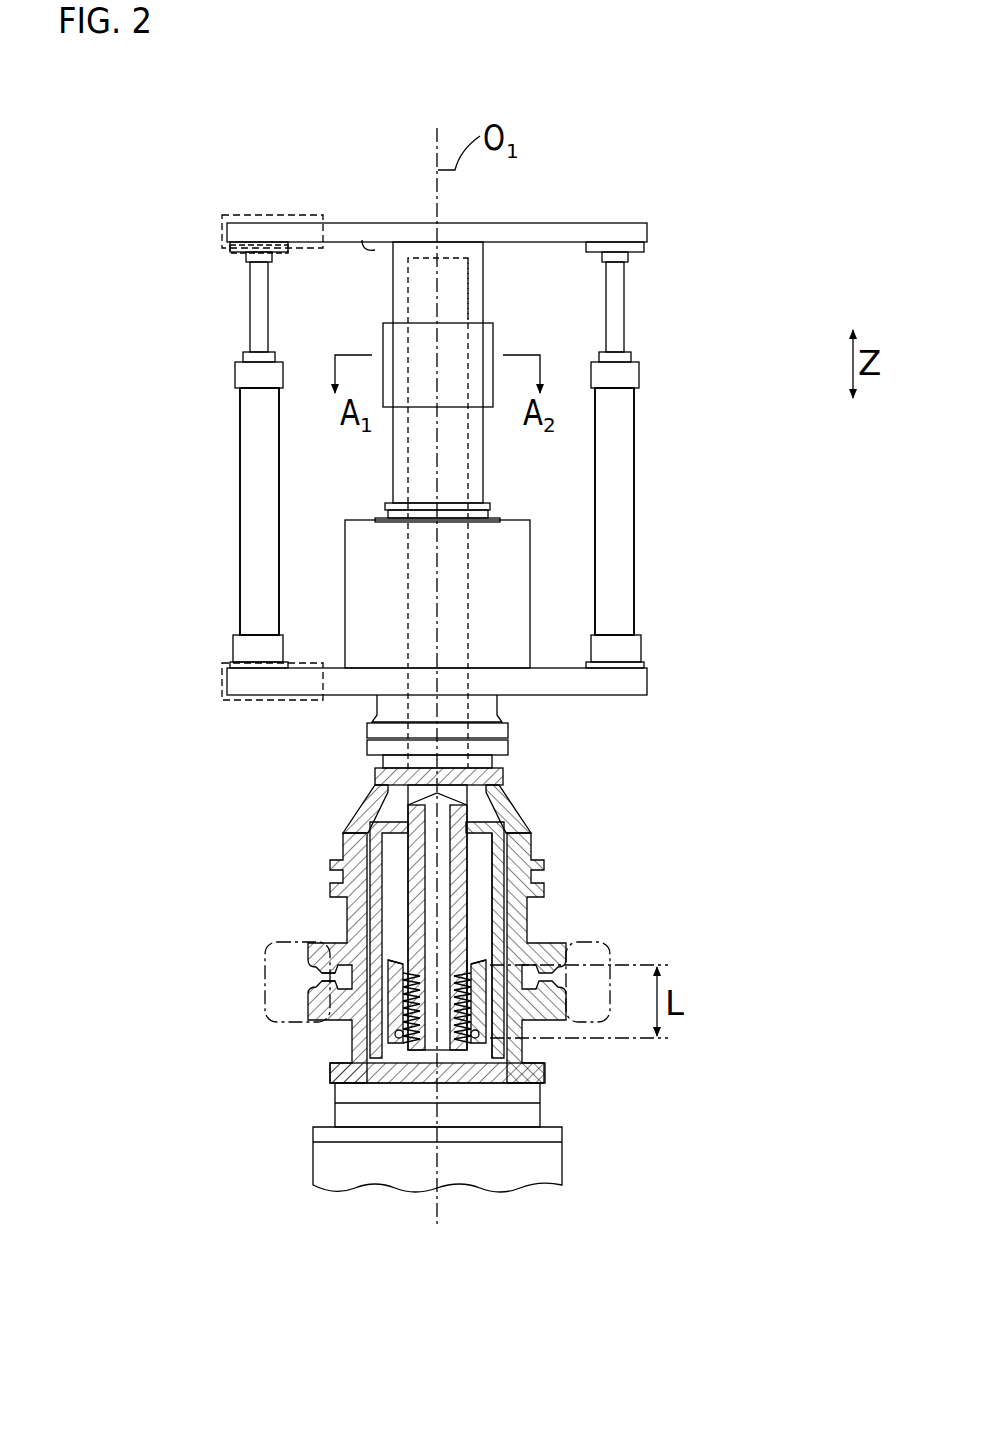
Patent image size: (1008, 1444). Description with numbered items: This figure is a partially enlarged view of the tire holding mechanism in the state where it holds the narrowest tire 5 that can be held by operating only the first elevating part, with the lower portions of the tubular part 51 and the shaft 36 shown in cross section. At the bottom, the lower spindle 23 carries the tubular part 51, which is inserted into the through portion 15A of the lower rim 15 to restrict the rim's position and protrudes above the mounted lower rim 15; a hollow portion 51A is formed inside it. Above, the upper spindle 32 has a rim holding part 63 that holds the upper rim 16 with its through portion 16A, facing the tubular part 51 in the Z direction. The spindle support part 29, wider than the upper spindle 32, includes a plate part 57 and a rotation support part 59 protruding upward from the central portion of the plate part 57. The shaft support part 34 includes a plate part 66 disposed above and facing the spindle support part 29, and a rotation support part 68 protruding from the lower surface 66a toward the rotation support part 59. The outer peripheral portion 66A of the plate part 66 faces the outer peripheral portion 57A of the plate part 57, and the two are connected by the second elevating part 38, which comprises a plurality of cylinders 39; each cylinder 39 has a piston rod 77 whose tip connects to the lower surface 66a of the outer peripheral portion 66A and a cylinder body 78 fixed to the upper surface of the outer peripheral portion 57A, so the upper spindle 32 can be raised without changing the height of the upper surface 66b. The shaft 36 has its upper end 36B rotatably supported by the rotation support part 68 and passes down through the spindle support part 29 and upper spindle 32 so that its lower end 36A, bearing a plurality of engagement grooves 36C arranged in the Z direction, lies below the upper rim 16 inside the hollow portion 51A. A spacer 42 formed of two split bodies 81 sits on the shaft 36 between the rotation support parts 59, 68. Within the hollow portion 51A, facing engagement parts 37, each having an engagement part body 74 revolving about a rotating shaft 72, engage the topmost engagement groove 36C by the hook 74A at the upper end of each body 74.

The tire 5 is at (265, 982).
The lower rim 15 is at (377, 1027).
The through portion 15A is at (370, 1045).
The upper rim 16 is at (330, 947).
The through portion 16A is at (383, 967).
The lower spindle 23 is at (312, 1152).
The spindle support part 29 is at (740, 570).
The upper spindle 32 is at (362, 757).
The shaft support part 34 is at (262, 218).
The shaft 36 is at (472, 470).
The lower end 36A is at (482, 1000).
The upper end 36B is at (470, 288).
The engagement groove 36C is at (455, 972).
The engagement part 37 is at (428, 1318).
The second elevating part 38 is at (645, 435).
The cylinder 39 is at (236, 455).
The spacer 42 is at (683, 248).
The tubular part 51 is at (497, 822).
The hollow portion 51A is at (482, 890).
The plate part 57 is at (650, 676).
The outer peripheral portion 57A is at (220, 672).
The rotation support part 59 is at (425, 452).
The rim holding part 63 is at (345, 833).
The plate part 66 is at (310, 232).
The lower surface 66a is at (362, 240).
The upper surface 66b is at (280, 224).
The outer peripheral portion 66A is at (218, 228).
The rotation support part 68 is at (400, 270).
The rotating shaft 72 is at (412, 1043).
The engagement part body 74 is at (388, 1043).
The hook 74A is at (400, 975).
The piston rod 77 is at (256, 305).
The cylinder body 78 is at (250, 542).
The split body 81 is at (420, 337).